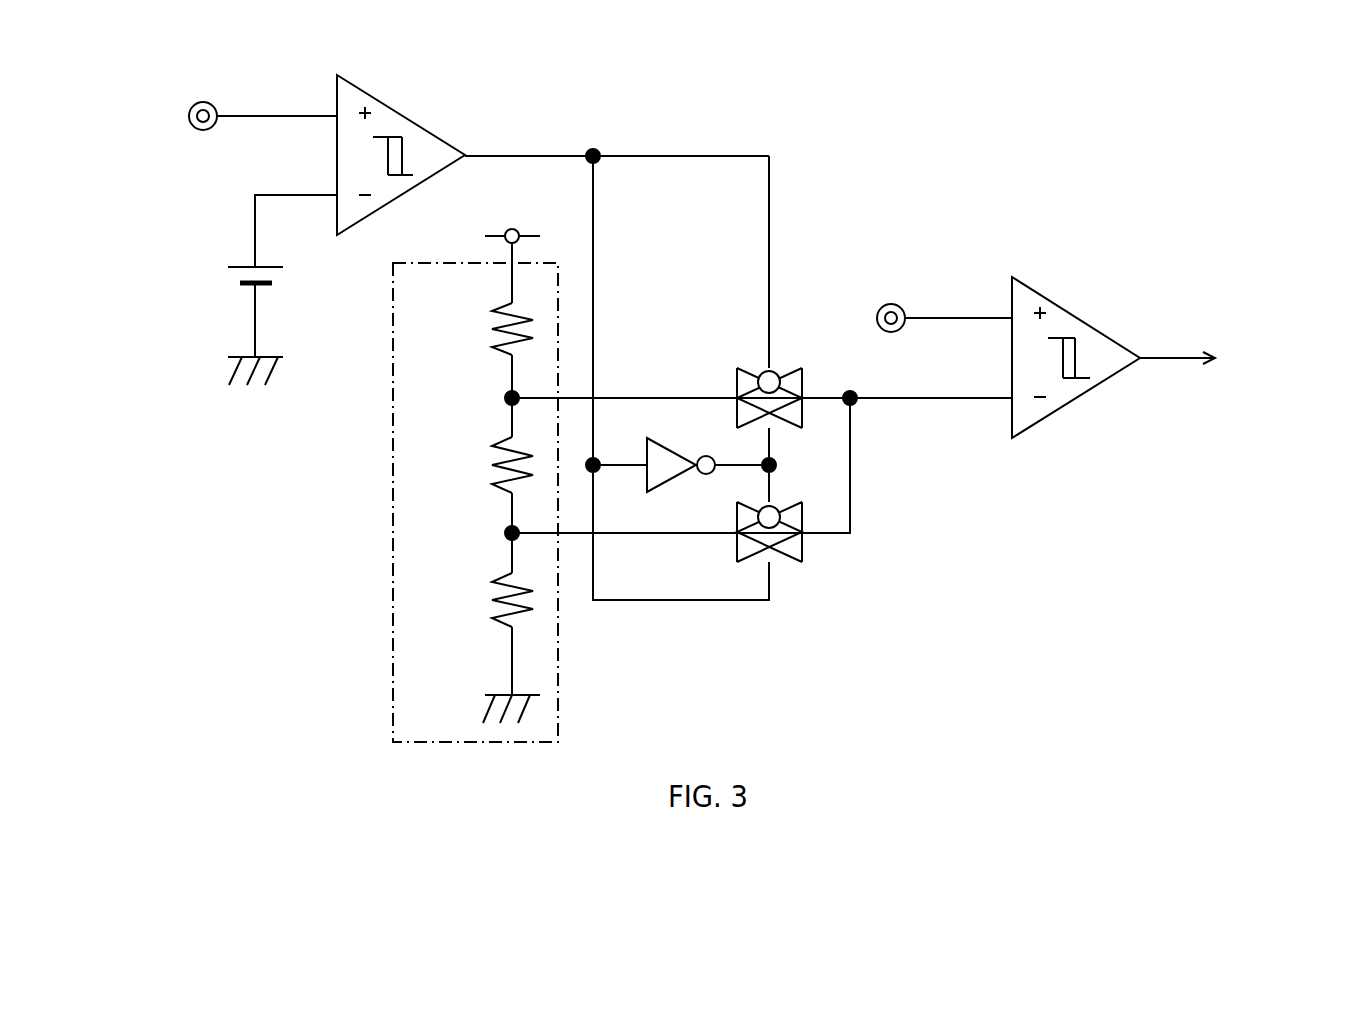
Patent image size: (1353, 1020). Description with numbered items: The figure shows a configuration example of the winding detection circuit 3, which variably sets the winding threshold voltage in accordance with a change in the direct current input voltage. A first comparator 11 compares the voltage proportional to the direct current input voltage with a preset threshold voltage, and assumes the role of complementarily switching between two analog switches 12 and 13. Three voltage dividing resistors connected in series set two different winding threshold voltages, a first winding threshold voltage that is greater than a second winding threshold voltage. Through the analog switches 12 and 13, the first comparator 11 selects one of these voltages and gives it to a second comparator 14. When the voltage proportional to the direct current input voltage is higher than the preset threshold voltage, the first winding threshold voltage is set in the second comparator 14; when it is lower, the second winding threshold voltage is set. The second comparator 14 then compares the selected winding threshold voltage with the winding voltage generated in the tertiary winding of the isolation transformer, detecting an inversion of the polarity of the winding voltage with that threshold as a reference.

The winding detection circuit 3 is at (1031, 200).
The first comparator 11 is at (417, 122).
The analog switch 12 is at (752, 375).
The analog switch 13 is at (792, 563).
The second comparator 14 is at (1105, 332).